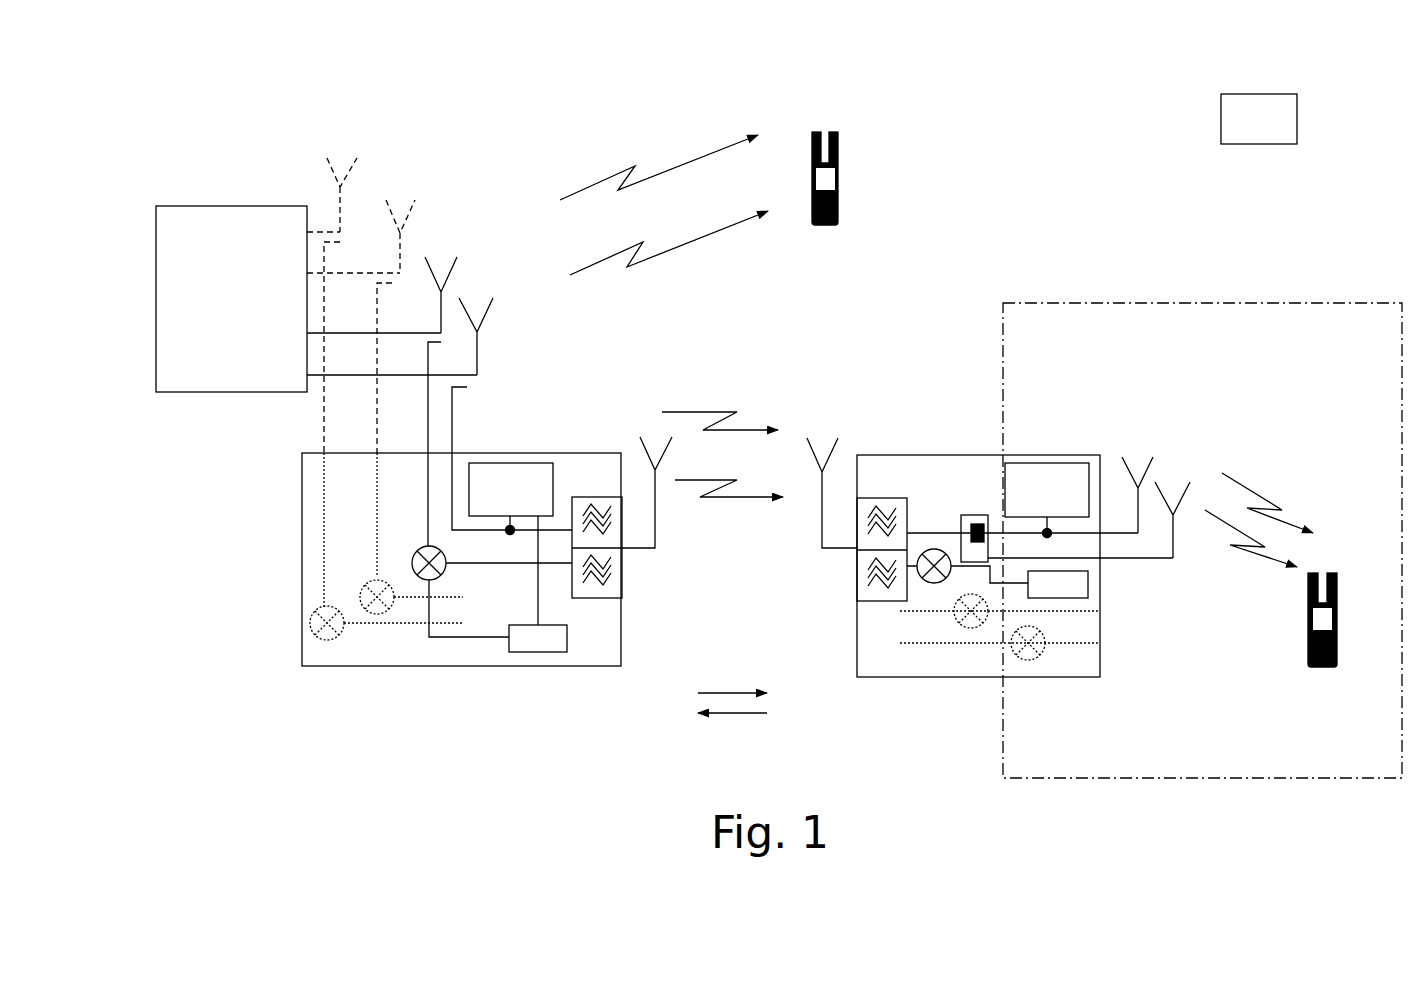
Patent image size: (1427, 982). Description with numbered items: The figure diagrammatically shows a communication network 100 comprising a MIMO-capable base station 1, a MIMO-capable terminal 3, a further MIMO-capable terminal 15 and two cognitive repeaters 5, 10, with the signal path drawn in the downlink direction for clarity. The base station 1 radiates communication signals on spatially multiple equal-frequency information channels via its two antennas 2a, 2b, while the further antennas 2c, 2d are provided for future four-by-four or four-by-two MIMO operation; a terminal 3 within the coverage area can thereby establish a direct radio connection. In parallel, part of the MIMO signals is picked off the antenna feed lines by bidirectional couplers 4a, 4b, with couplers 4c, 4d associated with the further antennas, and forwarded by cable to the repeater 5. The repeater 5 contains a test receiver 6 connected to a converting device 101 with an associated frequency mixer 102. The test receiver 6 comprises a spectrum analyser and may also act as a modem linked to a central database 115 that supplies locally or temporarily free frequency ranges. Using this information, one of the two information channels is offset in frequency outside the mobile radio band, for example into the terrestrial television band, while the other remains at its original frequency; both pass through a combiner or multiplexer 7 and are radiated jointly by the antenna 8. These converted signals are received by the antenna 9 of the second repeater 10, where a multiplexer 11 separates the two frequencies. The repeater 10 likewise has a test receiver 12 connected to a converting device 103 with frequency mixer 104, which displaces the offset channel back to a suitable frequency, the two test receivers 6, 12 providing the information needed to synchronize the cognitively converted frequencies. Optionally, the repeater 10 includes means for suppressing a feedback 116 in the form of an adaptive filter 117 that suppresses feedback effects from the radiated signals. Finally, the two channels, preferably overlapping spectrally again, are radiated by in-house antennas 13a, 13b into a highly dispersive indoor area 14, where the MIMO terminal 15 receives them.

The communication network 100 is at (593, 53).
The base station 1 is at (183, 198).
The antenna 2a is at (483, 293).
The antenna 2b is at (451, 253).
The antenna 2c is at (400, 190).
The antenna 2d is at (350, 148).
The terminal 3 is at (828, 123).
The bidirectional coupler 4a is at (485, 376).
The bidirectional coupler 4b is at (437, 328).
The bidirectional coupler 4c is at (393, 270).
The bidirectional coupler 4d is at (333, 223).
The repeater 5 is at (410, 576).
The test receiver 6 is at (545, 462).
The multiplexer 7 is at (605, 608).
The antenna 8 is at (648, 430).
The antenna 9 is at (822, 430).
The repeater 10 is at (989, 497).
The multiplexer 11 is at (872, 608).
The test receiver 12 is at (1065, 462).
The antenna 13a is at (1138, 450).
The antenna 13b is at (1173, 465).
The indoor area 14 is at (1117, 290).
The terminal 15 is at (1327, 565).
The converting device 101 is at (544, 653).
The frequency mixer 102 is at (418, 550).
The converting device 103 is at (1088, 592).
The frequency mixer 104 is at (932, 549).
The database 115 is at (1271, 103).
The means for suppressing a feedback 116 is at (968, 524).
The adaptive filter 117 is at (980, 515).